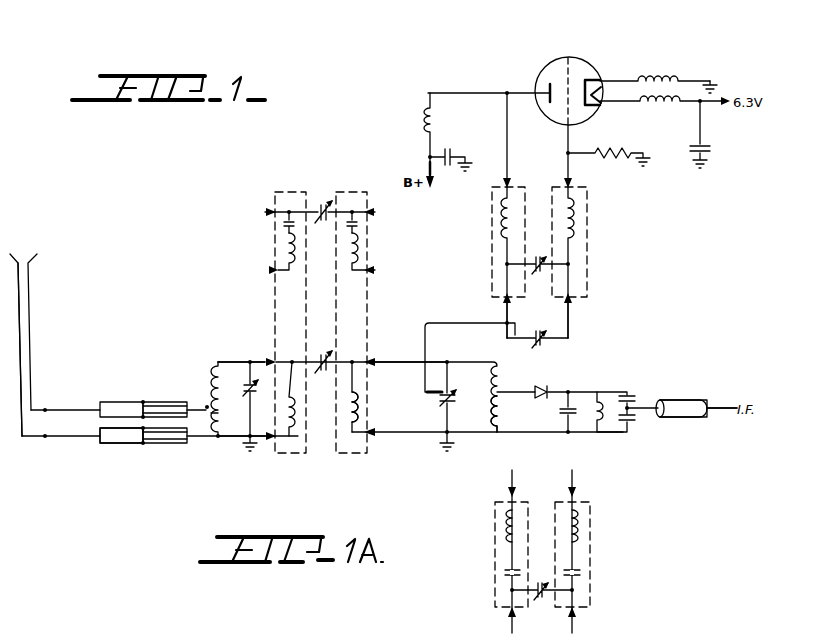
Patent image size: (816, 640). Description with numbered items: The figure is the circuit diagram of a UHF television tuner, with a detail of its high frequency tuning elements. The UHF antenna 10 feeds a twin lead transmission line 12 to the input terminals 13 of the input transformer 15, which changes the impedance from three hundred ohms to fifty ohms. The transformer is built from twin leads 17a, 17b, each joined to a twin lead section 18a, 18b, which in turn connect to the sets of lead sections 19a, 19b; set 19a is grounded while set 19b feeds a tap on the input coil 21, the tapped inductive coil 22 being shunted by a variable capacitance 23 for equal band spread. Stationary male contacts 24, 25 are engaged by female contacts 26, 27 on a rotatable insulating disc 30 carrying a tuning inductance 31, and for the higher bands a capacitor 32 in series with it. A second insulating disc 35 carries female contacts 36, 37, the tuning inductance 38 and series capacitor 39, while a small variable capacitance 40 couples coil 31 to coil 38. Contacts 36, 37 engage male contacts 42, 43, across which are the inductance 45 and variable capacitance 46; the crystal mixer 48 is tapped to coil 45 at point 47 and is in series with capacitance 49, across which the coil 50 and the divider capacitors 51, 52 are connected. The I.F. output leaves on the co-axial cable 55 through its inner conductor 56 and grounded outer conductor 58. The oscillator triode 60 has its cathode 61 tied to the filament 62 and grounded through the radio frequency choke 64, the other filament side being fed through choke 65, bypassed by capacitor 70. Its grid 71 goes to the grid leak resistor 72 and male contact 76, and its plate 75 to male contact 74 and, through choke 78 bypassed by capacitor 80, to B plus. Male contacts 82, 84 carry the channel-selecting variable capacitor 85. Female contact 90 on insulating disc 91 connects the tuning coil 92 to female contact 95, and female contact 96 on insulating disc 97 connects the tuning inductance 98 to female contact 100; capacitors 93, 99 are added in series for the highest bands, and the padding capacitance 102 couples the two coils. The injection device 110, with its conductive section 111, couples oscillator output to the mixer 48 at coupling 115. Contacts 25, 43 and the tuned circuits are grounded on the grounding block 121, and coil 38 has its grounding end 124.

In FIG. 1, the UHF antenna 10 is at (37, 258).
In FIG. 1, the transmission line 12 is at (36, 318).
In FIG. 1, the input terminals 13 is at (45, 436).
In FIG. 1, the input transformer 15 is at (125, 452).
In FIG. 1, the twin lead 17a is at (80, 407).
In FIG. 1, the twin lead 17b is at (63, 442).
In FIG. 1, the twin lead line section 18a is at (118, 400).
In FIG. 1, the twin lead line section 18b is at (107, 445).
In FIG. 1, the set of lead sections 19a is at (159, 400).
In FIG. 1, the set of lead sections 19b is at (160, 448).
In FIG. 1, the input coil 21 is at (203, 403).
In FIG. 1, the inductive coil 22 is at (218, 413).
In FIG. 1, the variable capacitance 23 is at (246, 389).
In FIG. 1, the male contact 24 is at (263, 360).
In FIG. 1, the male contact 25 is at (258, 445).
In FIG. 1, the female contact 26 is at (275, 360).
In FIG. 1, the female contact 27 is at (271, 432).
In FIG. 1, the insulating disc 30 is at (290, 200).
In FIG. 1, the tuning inductance 31 is at (282, 250).
In FIG. 1, the capacitor 32 is at (280, 224).
In FIG. 1, the insulating disc 35 is at (352, 200).
In FIG. 1, the female contact 36 is at (372, 358).
In FIG. 1, the female contact 37 is at (370, 440).
In FIG. 1, the tuning inductance 38 is at (365, 255).
In FIG. 1, the capacitor 39 is at (365, 228).
In FIG. 1, the variable capacitance 40 is at (323, 200).
In FIG. 1, the male contact 42 is at (382, 360).
In FIG. 1, the male contact 43 is at (385, 438).
In FIG. 1, the inductance 45 is at (500, 417).
In FIG. 1, the variable capacitance 46 is at (455, 401).
In FIG. 1, the tap point 47 is at (505, 389).
In FIG. 1, the crystal mixer 48 is at (545, 385).
In FIG. 1, the capacitance 49 is at (565, 418).
In FIG. 1, the coil 50 is at (615, 390).
In FIG. 1, the capacitor 51 is at (633, 393).
In FIG. 1, the capacitor 52 is at (637, 422).
In FIG. 1, the co-axial cable 55 is at (686, 391).
In FIG. 1, the inner conductor 56 is at (716, 400).
In FIG. 1, the outer conductor 58 is at (688, 420).
In FIG. 1, the high frequency triode 60 is at (582, 57).
In FIG. 1, the cathode 61 is at (586, 79).
In FIG. 1, the filament 62 is at (604, 95).
In FIG. 1, the radio frequency choke 64 is at (667, 64).
In FIG. 1, the radio frequency choke 65 is at (660, 112).
In FIG. 1, the capacitor 70 is at (715, 148).
In FIG. 1, the grid 71 is at (566, 66).
In FIG. 1, the grid leak resistor 72 is at (612, 137).
In FIG. 1, the male contact 74 is at (509, 141).
In FIG. 1, the plate 75 is at (548, 88).
In FIG. 1, the male contact 76 is at (566, 159).
In FIG. 1, the radio frequency choke 78 is at (437, 121).
In FIG. 1, the capacitor 80 is at (449, 148).
In FIG. 1, the male contact 82 is at (576, 328).
In FIG. 1, the male contact 84 is at (509, 319).
In FIG. 1, the variable capacitor 85 is at (548, 343).
In FIG. 1, the female contact 90 is at (575, 181).
In FIG. 1A, the female contact 90 is at (574, 493).
In FIG. 1, the insulating disc 91 is at (590, 206).
In FIG. 1A, the insulating disc 91 is at (590, 551).
In FIG. 1, the tuning coil 92 is at (585, 231).
In FIG. 1A, the tuning coil 92 is at (581, 531).
In FIG. 1A, the capacitor 93 is at (585, 578).
In FIG. 1, the female contact 95 is at (578, 304).
In FIG. 1A, the female contact 95 is at (576, 621).
In FIG. 1, the female contact 96 is at (503, 181).
In FIG. 1A, the female contact 96 is at (507, 492).
In FIG. 1, the insulating disc 97 is at (491, 206).
In FIG. 1A, the insulating disc 97 is at (493, 506).
In FIG. 1, the tuning inductance 98 is at (502, 226).
In FIG. 1A, the tuning inductance 98 is at (505, 529).
In FIG. 1A, the capacitor 99 is at (501, 573).
In FIG. 1, the female contact 100 is at (503, 303).
In FIG. 1A, the female contact 100 is at (510, 615).
In FIG. 1, the variable padding capacitance 102 is at (540, 261).
In FIG. 1A, the variable padding capacitance 102 is at (539, 583).
In FIG. 1, the injection device 110 is at (445, 320).
In FIG. 1, the conductive section 111 is at (513, 330).
In FIG. 1, the capacitive coupling 115 is at (430, 396).
In FIG. 1, the grounding block 121 is at (242, 447).
In FIG. 1, the grounding end 124 is at (363, 403).